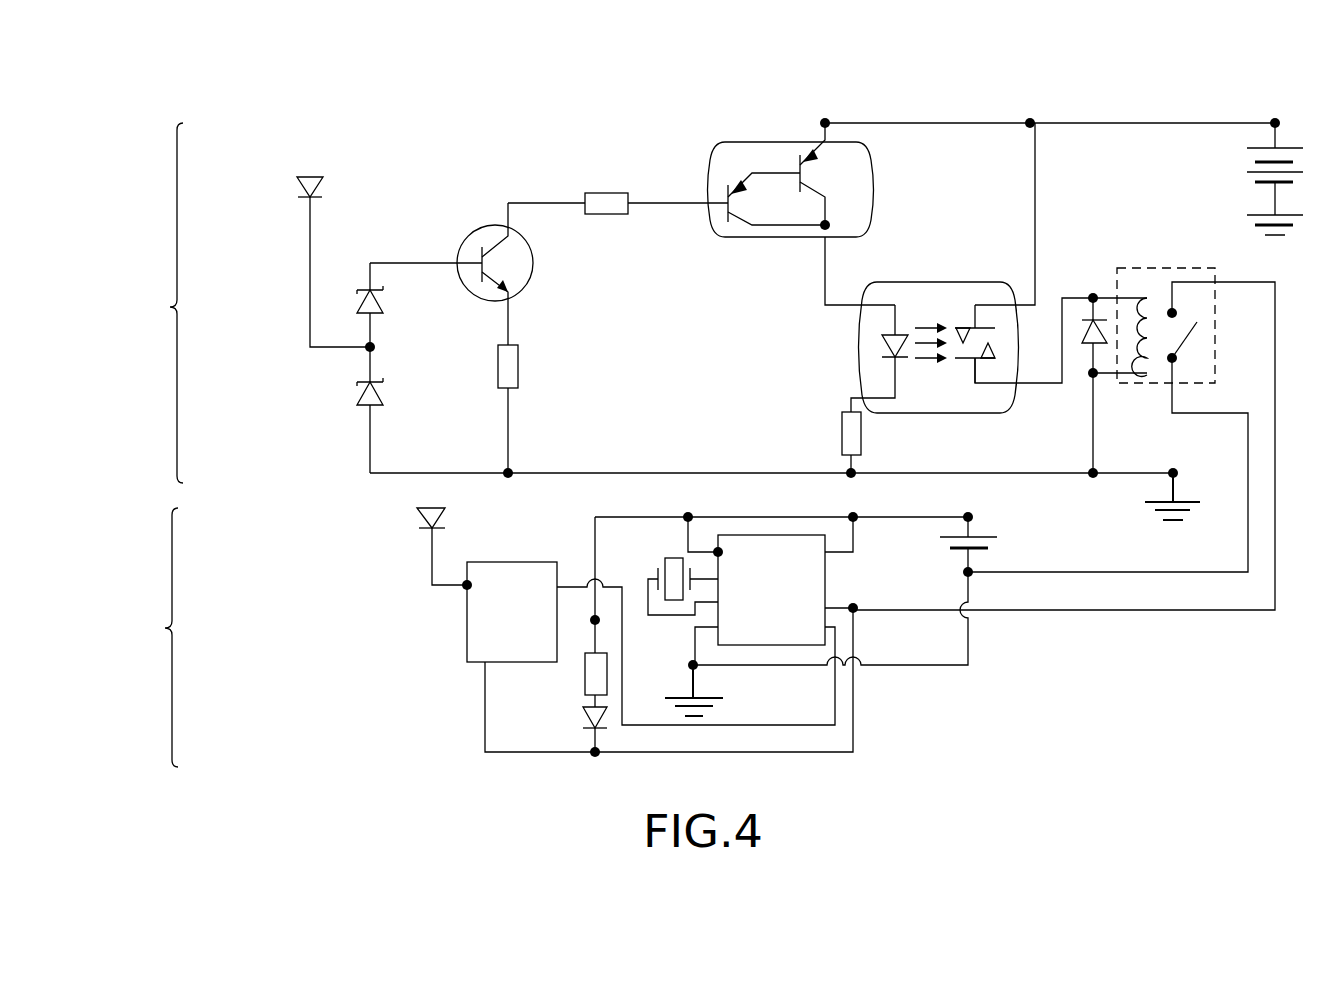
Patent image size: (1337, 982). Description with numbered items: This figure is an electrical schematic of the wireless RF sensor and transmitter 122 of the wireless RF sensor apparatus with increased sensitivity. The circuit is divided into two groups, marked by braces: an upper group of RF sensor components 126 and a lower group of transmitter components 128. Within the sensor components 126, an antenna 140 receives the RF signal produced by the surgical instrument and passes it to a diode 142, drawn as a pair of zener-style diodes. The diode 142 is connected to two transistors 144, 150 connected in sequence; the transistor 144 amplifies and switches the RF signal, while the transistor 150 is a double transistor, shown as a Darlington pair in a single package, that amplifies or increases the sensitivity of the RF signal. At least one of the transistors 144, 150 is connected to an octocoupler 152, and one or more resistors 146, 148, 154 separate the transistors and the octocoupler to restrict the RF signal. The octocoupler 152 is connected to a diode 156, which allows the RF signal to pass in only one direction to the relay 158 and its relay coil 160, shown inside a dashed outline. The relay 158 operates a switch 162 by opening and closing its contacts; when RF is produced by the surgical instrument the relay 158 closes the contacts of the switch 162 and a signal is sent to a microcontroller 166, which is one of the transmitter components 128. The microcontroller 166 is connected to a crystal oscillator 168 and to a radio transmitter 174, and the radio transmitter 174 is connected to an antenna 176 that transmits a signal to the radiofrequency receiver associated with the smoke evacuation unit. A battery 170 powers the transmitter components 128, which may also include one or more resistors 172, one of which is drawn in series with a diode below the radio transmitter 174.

The wireless RF sensor and transmitter 122 is at (606, 98).
The RF sensor components 126 is at (150, 303).
The transmitter components 128 is at (148, 637).
The antenna 140 is at (299, 190).
The diode 142 is at (358, 302).
The transistor 144 is at (470, 232).
The resistor 146 is at (519, 366).
The resistor 148 is at (606, 193).
The transistor 150 is at (760, 142).
The octocoupler 152 is at (915, 282).
The resistor 154 is at (841, 432).
The diode 156 is at (1089, 345).
The relay 158 is at (1165, 268).
The relay coil 160 is at (1139, 377).
The switch 162 is at (1197, 340).
The microcontroller 166 is at (752, 535).
The crystal oscillator 168 is at (678, 600).
The battery 170 is at (985, 537).
The resistor 172 is at (585, 683).
The radio transmitter 174 is at (517, 562).
The antenna 176 is at (420, 518).